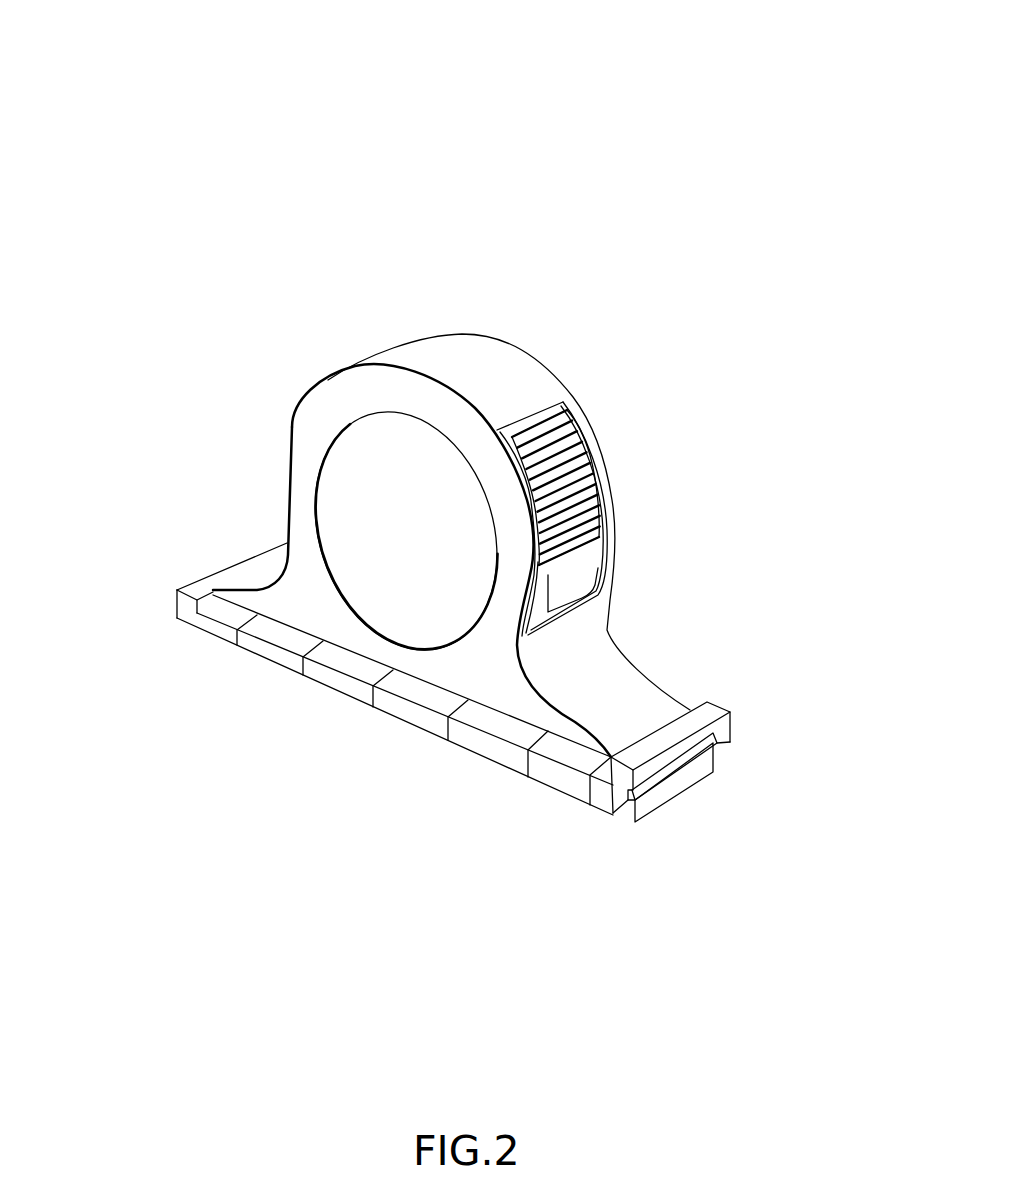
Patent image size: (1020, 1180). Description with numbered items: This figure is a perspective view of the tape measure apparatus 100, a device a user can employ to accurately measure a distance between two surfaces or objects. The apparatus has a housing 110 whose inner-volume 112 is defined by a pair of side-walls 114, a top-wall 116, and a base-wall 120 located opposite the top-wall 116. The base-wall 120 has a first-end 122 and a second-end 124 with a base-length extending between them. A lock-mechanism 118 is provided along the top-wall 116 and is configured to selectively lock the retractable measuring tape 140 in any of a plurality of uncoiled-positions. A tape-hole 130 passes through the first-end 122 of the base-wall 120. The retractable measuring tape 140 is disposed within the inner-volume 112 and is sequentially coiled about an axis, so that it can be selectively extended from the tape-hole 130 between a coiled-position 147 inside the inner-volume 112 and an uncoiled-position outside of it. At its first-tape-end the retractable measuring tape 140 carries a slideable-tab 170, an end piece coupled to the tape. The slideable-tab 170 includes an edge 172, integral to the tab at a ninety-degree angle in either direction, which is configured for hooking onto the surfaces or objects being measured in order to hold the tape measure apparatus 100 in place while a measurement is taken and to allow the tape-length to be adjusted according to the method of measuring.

The tape measure apparatus 100 is at (556, 100).
The coiled-position 147 is at (590, 130).
The housing 110 is at (332, 375).
The inner-volume 112 is at (337, 483).
The side-walls 114 is at (483, 447).
The top-wall 116 is at (513, 350).
The lock-mechanism 118 is at (573, 453).
The base-wall 120 is at (252, 685).
The first-end 122 is at (600, 803).
The second-end 124 is at (197, 587).
The tape-hole 130 is at (613, 815).
The retractable measuring tape 140 is at (712, 740).
The slideable-tab 170 is at (712, 762).
The edge 172 is at (673, 790).